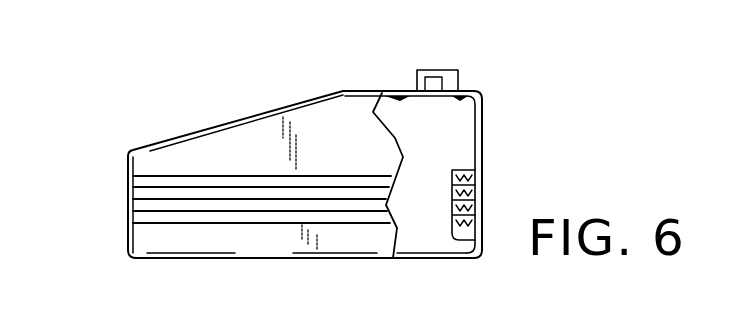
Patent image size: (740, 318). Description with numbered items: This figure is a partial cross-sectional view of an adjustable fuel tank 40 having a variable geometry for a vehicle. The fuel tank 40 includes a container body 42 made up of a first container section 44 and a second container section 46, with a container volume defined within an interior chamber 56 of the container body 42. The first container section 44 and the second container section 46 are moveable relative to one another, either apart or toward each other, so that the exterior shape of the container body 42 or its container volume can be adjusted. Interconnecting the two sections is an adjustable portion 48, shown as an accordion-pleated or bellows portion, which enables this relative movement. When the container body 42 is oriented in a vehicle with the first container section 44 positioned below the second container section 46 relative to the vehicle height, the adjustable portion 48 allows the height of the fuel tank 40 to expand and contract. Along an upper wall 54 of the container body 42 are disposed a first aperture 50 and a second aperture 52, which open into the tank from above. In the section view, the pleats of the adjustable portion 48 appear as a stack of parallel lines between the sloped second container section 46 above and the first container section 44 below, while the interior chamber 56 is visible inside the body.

The adjustable fuel tank 40 is at (126, 90).
The container body 42 is at (207, 245).
The first container section 44 is at (263, 240).
The second container section 46 is at (318, 122).
The adjustable portion 48 is at (157, 207).
The first aperture 50 is at (450, 78).
The second aperture 52 is at (432, 78).
The upper wall 54 is at (463, 90).
The interior chamber 56 is at (455, 130).